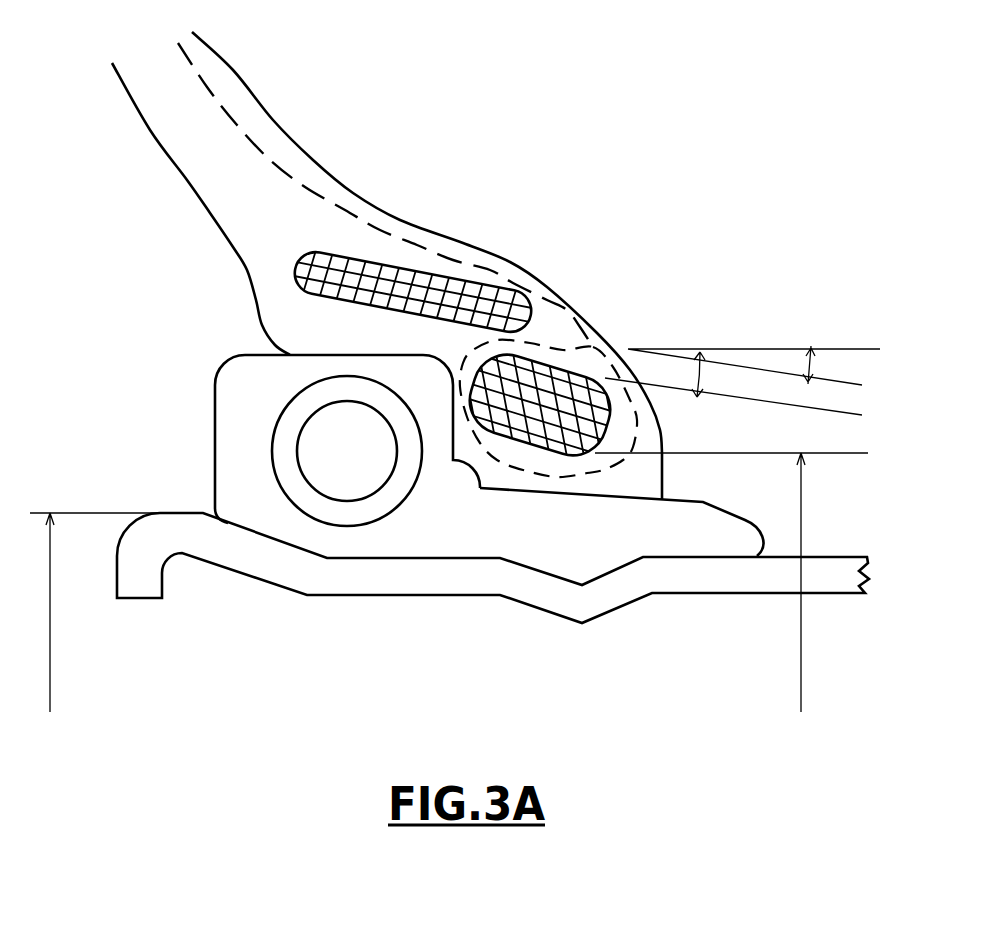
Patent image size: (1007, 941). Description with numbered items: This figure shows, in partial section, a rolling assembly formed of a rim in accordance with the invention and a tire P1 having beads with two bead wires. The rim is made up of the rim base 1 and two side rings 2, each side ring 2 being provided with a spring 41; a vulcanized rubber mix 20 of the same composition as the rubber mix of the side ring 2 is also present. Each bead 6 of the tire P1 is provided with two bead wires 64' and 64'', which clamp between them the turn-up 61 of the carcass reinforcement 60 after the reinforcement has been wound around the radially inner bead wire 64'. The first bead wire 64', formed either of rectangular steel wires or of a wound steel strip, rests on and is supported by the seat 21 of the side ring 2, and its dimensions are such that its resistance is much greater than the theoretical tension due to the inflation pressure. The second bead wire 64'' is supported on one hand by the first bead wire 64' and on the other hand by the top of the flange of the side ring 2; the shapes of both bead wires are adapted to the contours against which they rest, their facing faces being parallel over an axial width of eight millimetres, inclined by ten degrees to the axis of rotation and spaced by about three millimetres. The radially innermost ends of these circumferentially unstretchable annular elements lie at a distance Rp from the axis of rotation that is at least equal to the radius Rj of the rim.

The rim base 1 is at (417, 575).
The side ring 2 is at (243, 420).
The bead 6 is at (255, 200).
The vulcanized rubber mix 20 is at (352, 483).
The seat of the side ring 21 is at (600, 485).
The spring 41 is at (308, 503).
The carcass reinforcement 60 is at (383, 230).
The turn-up of the carcass reinforcement 61 is at (543, 347).
The radially inner bead wire 64' is at (596, 405).
The second bead wire 64'' is at (456, 255).
The tire P1 is at (230, 172).
The radius of the rim Rj is at (116, 616).
The radial distance of the annular element ends Rp is at (731, 582).
The distance S is at (818, 358).